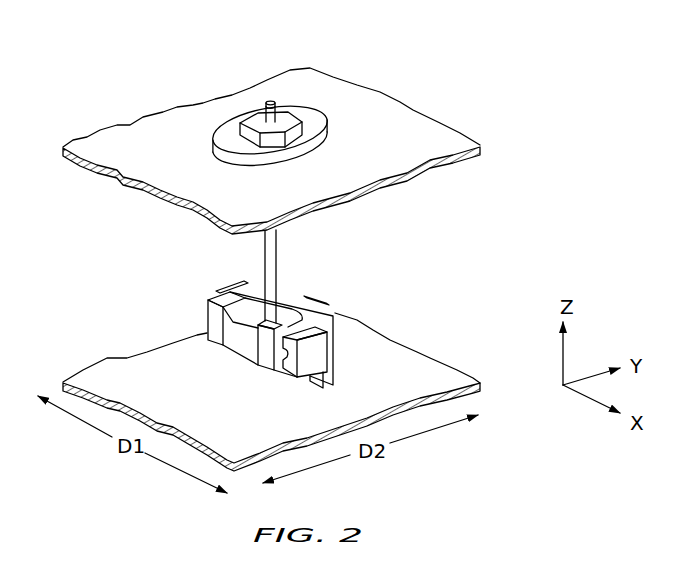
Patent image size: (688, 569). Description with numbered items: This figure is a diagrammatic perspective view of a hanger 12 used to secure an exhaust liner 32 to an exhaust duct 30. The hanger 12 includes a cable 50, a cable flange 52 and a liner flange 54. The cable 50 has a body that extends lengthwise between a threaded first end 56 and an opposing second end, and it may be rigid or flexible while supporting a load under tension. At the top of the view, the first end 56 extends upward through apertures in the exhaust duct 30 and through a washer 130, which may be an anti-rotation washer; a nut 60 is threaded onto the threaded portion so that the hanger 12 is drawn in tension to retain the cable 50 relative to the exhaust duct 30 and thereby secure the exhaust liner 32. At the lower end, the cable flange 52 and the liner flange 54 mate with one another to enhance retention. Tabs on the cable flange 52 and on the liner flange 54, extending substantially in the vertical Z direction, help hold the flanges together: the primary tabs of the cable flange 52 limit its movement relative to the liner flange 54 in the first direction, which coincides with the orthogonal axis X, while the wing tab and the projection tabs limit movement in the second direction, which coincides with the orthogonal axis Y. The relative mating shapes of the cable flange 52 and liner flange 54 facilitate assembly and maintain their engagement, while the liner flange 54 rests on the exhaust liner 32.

The hanger 12 is at (474, 232).
The exhaust duct 30 is at (393, 149).
The exhaust liner 32 is at (393, 389).
The cable 50 is at (294, 252).
The cable flange 52 is at (289, 383).
The liner flange 54 is at (310, 357).
The first end 56 is at (270, 100).
The nut 60 is at (253, 113).
The washer 130 is at (220, 153).